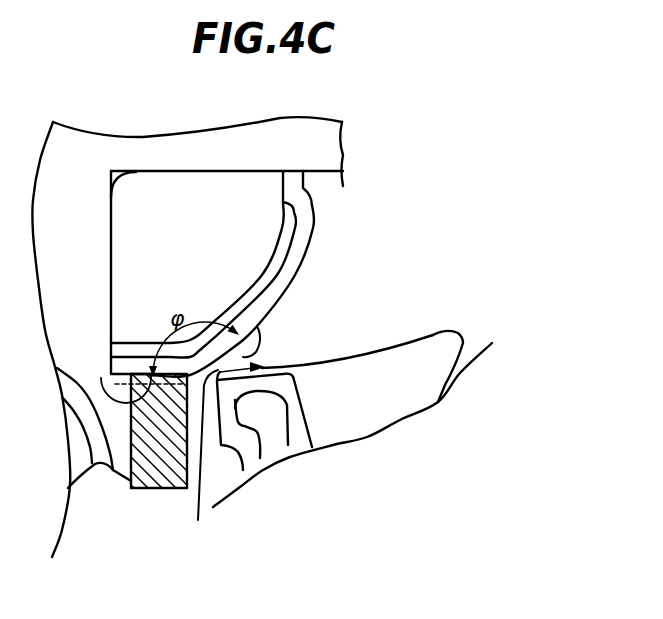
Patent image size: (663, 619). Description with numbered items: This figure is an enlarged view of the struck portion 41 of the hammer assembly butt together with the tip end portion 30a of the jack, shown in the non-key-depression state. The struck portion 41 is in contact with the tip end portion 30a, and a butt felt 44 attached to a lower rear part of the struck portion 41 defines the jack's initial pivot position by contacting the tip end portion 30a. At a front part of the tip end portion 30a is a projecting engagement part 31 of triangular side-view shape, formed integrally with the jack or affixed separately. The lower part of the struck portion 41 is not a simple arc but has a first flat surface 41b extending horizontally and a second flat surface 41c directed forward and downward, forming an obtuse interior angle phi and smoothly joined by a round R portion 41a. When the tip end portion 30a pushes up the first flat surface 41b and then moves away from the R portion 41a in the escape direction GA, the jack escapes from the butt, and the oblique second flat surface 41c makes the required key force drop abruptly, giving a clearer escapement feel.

The struck portion 41 is at (130, 272).
The R portion 41a is at (198, 462).
The first flat surface 41b is at (101, 378).
The second flat surface 41c is at (262, 358).
The butt felt 44 is at (157, 488).
The tip end portion 30a is at (283, 380).
The projecting engagement part 31 is at (425, 343).
The escape direction GA is at (243, 378).